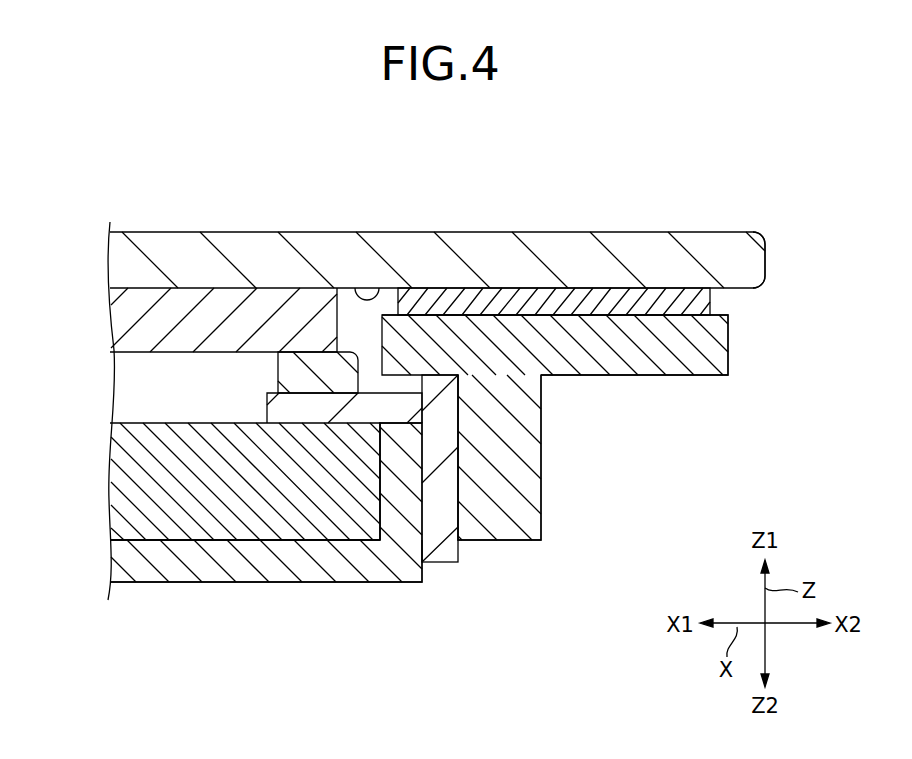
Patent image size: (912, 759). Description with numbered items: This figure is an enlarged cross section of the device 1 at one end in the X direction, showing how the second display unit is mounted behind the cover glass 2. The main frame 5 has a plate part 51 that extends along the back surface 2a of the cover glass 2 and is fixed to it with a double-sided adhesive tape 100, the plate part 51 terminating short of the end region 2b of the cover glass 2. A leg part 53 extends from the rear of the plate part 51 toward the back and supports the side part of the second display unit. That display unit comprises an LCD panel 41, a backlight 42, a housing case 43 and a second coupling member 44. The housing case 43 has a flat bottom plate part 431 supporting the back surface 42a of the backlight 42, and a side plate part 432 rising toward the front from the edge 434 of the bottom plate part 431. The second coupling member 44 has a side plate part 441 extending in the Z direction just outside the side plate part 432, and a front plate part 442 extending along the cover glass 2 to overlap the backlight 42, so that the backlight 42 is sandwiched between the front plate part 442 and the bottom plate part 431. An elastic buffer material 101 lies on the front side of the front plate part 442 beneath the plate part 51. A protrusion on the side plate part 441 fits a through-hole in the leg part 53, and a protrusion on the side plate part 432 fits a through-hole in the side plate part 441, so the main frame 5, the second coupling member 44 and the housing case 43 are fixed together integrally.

The electronic device 1 is at (427, 168).
The cover glass 2 is at (568, 243).
The back surface of the cover glass 2a is at (384, 300).
The end portion of cover member 2b is at (692, 230).
The LCD panel 41 is at (183, 300).
The backlight 42 is at (123, 503).
The back surface of the backlight 42a is at (215, 542).
The housing case 43 is at (253, 590).
The bottom plate part 431 is at (145, 572).
The side plate part 432 is at (390, 448).
The edge 434 is at (407, 572).
The second coupling member 44 is at (459, 525).
The side plate part 441 is at (443, 552).
The front plate part 442 is at (283, 405).
The main frame 5 is at (618, 380).
The plate part 51 is at (697, 365).
The leg part 53 is at (530, 485).
The double-sided adhesive tape 100 is at (712, 298).
The elastic buffer material 101 is at (290, 380).